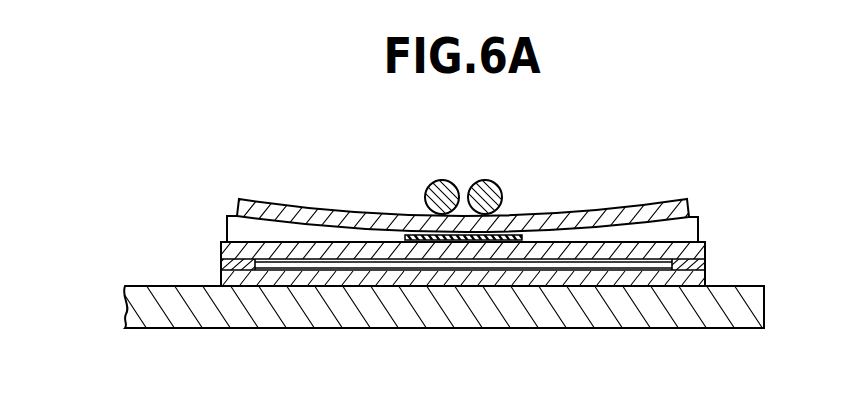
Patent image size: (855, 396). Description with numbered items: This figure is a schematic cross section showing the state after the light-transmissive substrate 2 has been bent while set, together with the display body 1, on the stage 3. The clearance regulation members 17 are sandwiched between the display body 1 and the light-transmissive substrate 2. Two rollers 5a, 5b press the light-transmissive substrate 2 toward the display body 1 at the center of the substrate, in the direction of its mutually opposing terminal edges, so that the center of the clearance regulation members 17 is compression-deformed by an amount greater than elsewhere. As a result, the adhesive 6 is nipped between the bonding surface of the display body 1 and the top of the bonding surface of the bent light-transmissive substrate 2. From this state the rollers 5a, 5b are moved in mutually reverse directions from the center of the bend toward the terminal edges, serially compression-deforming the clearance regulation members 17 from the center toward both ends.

The display body 1 is at (707, 248).
The light-transmissive substrate 2 is at (633, 206).
The stage 3 is at (303, 322).
The roller 5a is at (441, 190).
The roller 5b is at (486, 190).
The adhesive 6 is at (435, 242).
The clearance regulation member 17 is at (696, 228).